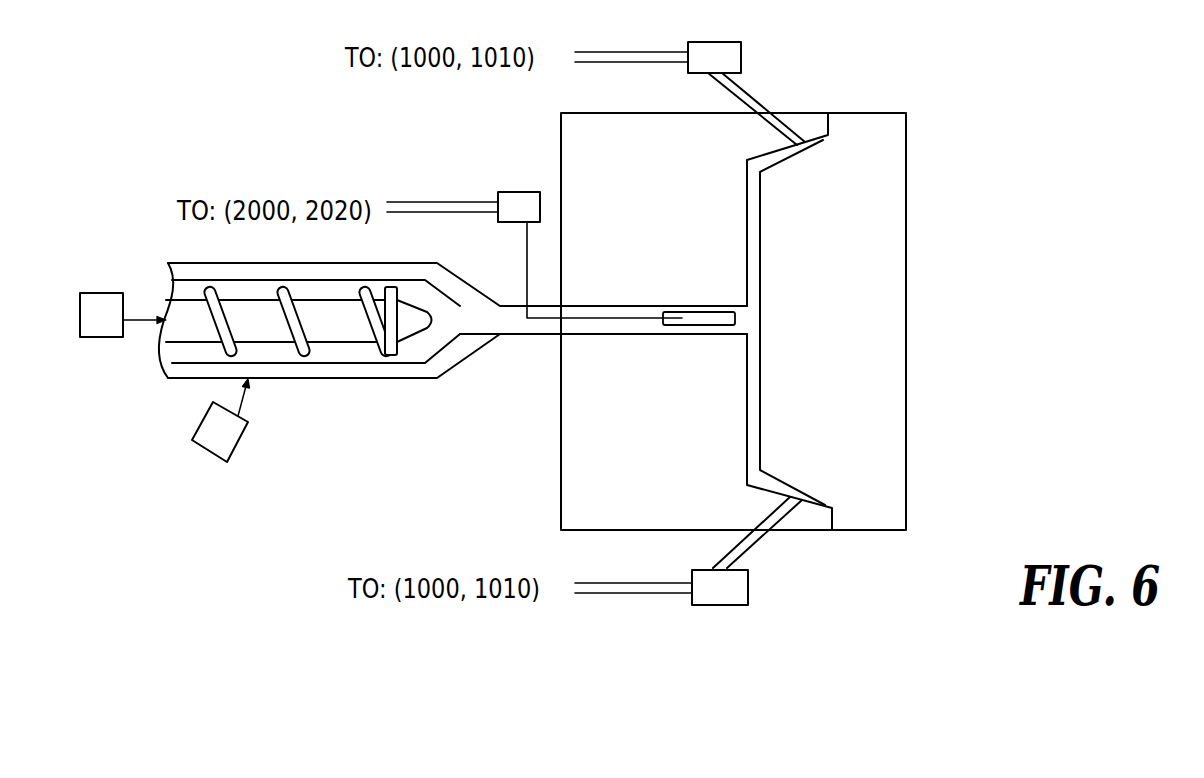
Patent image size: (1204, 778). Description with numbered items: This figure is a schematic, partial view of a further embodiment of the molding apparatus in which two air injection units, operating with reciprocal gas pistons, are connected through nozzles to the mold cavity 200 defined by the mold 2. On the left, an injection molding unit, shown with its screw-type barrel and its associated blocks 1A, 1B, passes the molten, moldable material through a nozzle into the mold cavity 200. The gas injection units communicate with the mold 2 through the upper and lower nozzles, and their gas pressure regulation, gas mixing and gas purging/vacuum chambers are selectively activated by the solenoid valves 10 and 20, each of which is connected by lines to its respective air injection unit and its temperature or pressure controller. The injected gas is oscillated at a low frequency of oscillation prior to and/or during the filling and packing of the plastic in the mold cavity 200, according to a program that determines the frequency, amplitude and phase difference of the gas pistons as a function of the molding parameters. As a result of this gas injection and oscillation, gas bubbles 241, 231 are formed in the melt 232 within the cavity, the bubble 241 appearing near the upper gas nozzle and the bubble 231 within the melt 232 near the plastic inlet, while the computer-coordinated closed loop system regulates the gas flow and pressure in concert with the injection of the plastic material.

The material feed controller 1A is at (102, 303).
The screw drive unit 1B is at (233, 432).
The mold 2 is at (868, 108).
The solenoid valve 10 is at (720, 48).
The solenoid valve 20 is at (528, 200).
The mold cavity 200 is at (753, 265).
The gas bubble 231 is at (711, 318).
The melt 232 is at (753, 388).
The gas bubble 241 is at (768, 171).